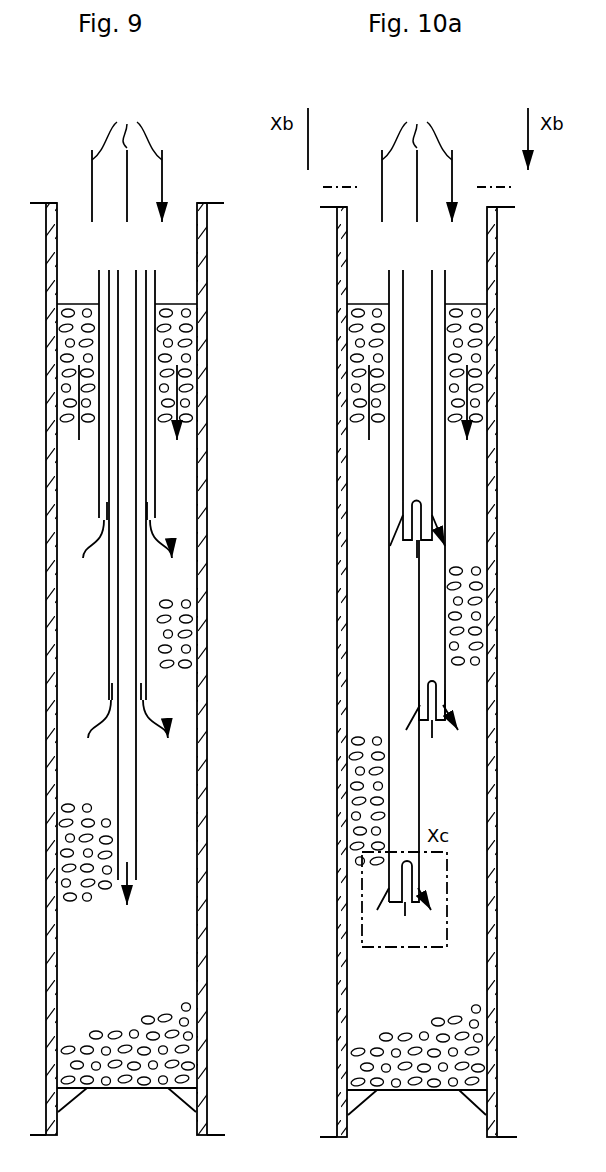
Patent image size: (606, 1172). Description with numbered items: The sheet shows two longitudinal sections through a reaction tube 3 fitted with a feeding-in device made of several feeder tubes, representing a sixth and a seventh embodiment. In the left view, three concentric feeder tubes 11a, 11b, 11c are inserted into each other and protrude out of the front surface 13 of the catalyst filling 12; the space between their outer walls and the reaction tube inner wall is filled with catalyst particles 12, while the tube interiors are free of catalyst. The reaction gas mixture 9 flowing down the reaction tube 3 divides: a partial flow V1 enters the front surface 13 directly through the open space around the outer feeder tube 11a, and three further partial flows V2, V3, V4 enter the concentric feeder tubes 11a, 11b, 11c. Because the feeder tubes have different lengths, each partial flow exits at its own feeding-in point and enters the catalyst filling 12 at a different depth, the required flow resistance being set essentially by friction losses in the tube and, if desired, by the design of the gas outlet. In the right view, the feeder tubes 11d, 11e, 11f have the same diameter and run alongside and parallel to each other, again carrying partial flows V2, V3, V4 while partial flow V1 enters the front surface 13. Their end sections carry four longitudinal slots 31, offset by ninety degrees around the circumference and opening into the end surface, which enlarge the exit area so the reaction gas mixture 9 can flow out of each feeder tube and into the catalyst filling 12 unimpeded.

In FIG. 9, the reaction tube 3 is at (207, 363).
In FIG. 10a, the reaction tube 3 is at (498, 363).
In FIG. 9, the reaction gas mixture 9 is at (127, 162).
In FIG. 10a, the reaction gas mixture 9 is at (417, 162).
In FIG. 9, the catalyst filling 12 is at (178, 330).
In FIG. 10a, the catalyst filling 12 is at (468, 332).
In FIG. 9, the front surface of the catalyst filling 13 is at (181, 303).
In FIG. 10a, the front surface of the catalyst filling 13 is at (470, 305).
In FIG. 9, the outer feeder tube 11a is at (158, 487).
In FIG. 9, the middle feeder tube 11b is at (152, 672).
In FIG. 9, the inner feeder tube 11c is at (142, 810).
In FIG. 10a, the first feeder tube 11d is at (415, 482).
In FIG. 10a, the second feeder tube 11e is at (428, 627).
In FIG. 10a, the third feeder tube 11f is at (405, 806).
In FIG. 10a, the longitudinal slots 31 is at (440, 690).
In FIG. 9, the partial flow V1 is at (178, 430).
In FIG. 10a, the partial flow V1 is at (467, 432).
In FIG. 9, the partial flow V2 is at (172, 550).
In FIG. 10a, the partial flow V2 is at (438, 532).
In FIG. 9, the partial flow V3 is at (168, 732).
In FIG. 10a, the partial flow V3 is at (455, 715).
In FIG. 9, the partial flow V4 is at (128, 893).
In FIG. 10a, the partial flow V4 is at (430, 893).